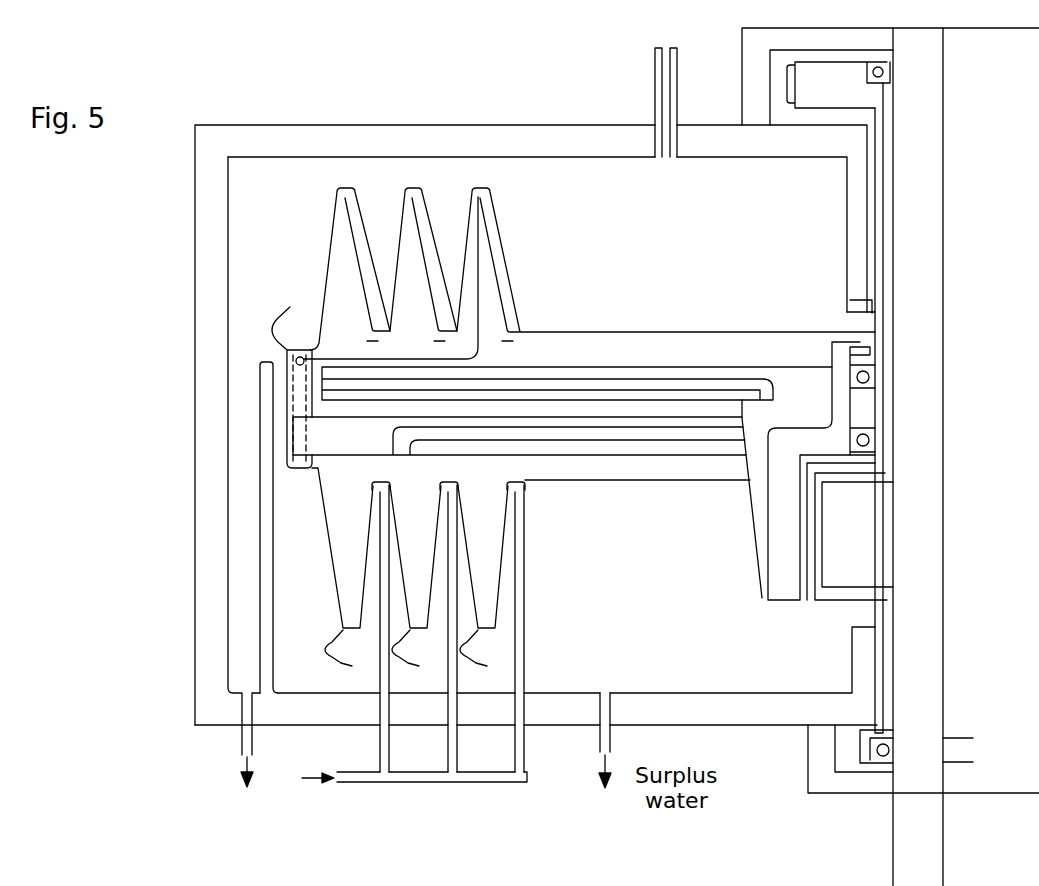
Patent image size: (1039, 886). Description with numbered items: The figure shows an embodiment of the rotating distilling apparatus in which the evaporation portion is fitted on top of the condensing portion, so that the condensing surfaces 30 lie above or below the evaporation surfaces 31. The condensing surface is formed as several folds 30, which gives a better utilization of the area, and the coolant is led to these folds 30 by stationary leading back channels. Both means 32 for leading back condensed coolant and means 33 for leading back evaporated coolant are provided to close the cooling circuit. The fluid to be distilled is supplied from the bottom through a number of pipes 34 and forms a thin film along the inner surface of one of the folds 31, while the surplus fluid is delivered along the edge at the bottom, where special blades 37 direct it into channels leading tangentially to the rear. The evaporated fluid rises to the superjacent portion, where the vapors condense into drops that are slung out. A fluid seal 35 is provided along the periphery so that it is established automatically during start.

The condensing surfaces 30 is at (333, 220).
The evaporation surfaces 31 is at (372, 510).
The means for leading back condensed coolant 32 is at (332, 322).
The means for leading back evaporated coolant 33 is at (345, 386).
The pipes 34 is at (245, 645).
The fluid seal 35 is at (295, 393).
The blades 37 is at (395, 660).